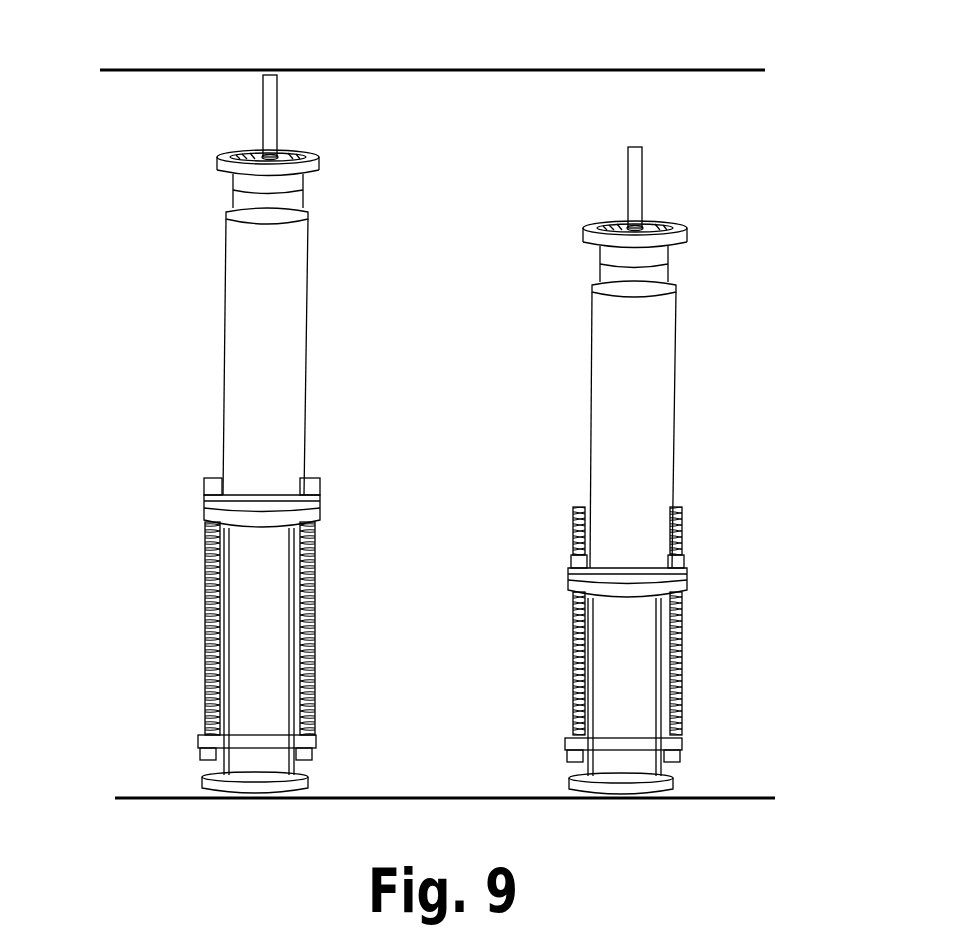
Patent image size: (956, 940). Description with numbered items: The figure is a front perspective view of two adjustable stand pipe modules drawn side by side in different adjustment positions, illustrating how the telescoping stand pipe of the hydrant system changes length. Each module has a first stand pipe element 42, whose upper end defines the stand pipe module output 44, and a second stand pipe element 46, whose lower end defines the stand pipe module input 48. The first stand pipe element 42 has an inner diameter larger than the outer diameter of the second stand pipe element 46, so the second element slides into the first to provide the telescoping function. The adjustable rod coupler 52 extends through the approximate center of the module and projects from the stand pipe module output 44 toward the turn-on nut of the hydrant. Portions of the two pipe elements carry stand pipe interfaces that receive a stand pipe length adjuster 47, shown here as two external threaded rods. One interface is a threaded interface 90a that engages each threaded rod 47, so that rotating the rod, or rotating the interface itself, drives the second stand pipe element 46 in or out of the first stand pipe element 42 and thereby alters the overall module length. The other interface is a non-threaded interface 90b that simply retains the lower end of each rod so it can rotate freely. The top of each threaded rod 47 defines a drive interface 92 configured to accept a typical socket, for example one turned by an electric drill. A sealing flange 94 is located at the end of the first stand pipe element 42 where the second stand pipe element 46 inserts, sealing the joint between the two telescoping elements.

The adjustable rod coupler 52 is at (270, 108).
The stand pipe module output 44 is at (215, 162).
The first stand pipe element 42 is at (258, 285).
The drive interface 92 is at (215, 478).
The sealing flange 94 is at (322, 505).
The threaded interface 90a is at (204, 488).
The stand pipe length adjuster 47 is at (205, 555).
The second stand pipe element 46 is at (245, 637).
The non-threaded interface 90b is at (205, 750).
The stand pipe module input 48 is at (685, 795).